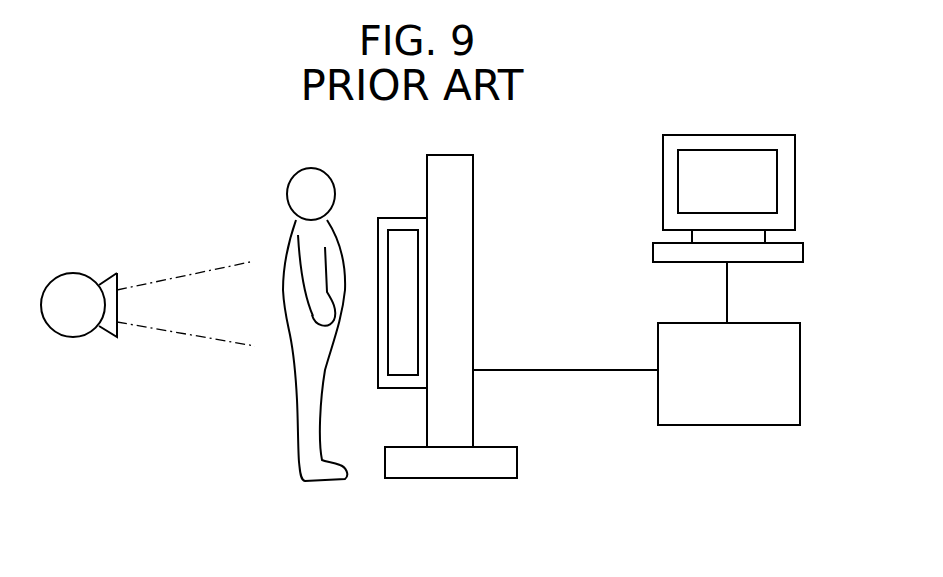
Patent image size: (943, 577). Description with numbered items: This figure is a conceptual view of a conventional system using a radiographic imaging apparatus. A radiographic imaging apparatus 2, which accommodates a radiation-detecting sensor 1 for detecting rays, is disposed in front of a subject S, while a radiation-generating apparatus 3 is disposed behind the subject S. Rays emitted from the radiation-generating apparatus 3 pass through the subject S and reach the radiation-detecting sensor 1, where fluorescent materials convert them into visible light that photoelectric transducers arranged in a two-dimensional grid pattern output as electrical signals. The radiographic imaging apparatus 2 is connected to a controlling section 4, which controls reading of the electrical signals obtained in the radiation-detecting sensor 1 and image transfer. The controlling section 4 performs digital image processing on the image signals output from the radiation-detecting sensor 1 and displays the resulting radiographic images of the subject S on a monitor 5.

The radiation-detecting sensor 1 is at (403, 370).
The radiographic imaging apparatus 2 is at (398, 226).
The radiation-generating apparatus 3 is at (72, 285).
The controlling section 4 is at (734, 412).
The monitor 5 is at (727, 135).
The subject S is at (289, 253).